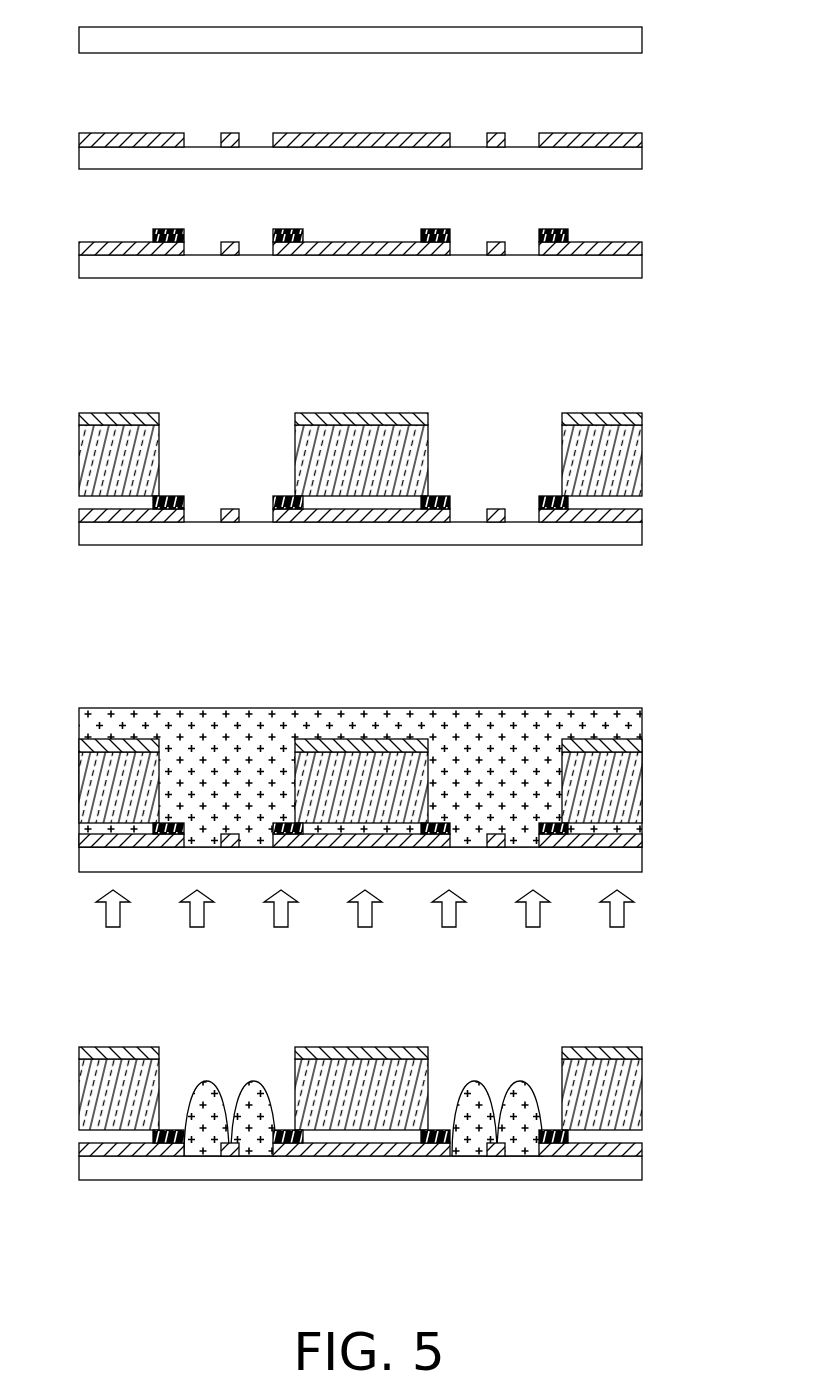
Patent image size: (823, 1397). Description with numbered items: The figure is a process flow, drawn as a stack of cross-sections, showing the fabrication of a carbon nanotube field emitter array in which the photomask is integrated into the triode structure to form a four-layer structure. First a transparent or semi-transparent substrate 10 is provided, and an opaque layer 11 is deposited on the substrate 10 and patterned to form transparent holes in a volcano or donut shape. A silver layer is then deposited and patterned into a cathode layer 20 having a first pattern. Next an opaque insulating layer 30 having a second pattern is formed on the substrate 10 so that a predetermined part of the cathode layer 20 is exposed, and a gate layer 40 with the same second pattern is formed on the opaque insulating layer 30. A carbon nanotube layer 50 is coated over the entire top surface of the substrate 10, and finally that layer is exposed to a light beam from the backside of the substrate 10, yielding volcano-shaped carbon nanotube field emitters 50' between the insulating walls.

The substrate 10 is at (638, 40).
The opaque layer 11 is at (620, 137).
The cathode layer 20 is at (568, 233).
The opaque insulating layer 30 is at (636, 478).
The gate layer 40 is at (611, 436).
The carbon nanotube layer 50 is at (405, 775).
The carbon nanotube field emitter 50' is at (377, 1078).